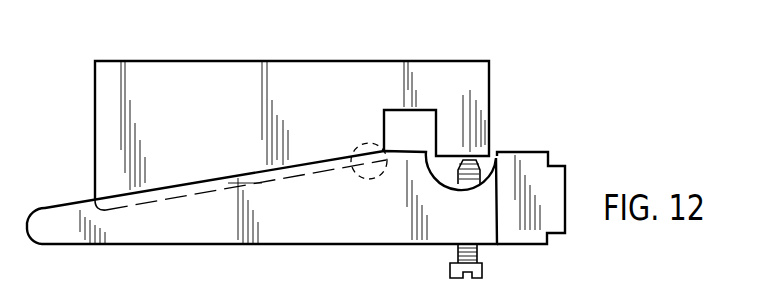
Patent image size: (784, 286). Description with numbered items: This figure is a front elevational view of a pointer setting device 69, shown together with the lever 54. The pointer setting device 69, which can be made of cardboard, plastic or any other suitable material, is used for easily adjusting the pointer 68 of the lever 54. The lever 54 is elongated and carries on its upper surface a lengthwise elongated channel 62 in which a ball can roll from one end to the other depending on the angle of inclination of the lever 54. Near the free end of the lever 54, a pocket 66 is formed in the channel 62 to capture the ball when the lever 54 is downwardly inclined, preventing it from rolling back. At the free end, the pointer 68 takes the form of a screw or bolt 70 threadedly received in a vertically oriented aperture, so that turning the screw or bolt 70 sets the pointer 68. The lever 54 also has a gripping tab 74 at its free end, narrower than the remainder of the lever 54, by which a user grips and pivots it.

The lever 54 is at (225, 207).
The elongated channel 62 is at (218, 188).
The pocket 66 is at (364, 145).
The pointer setting device 69 is at (413, 72).
The gripping tab 74 is at (535, 162).
The pointer 68 is at (456, 256).
The screw or bolt 70 is at (483, 270).